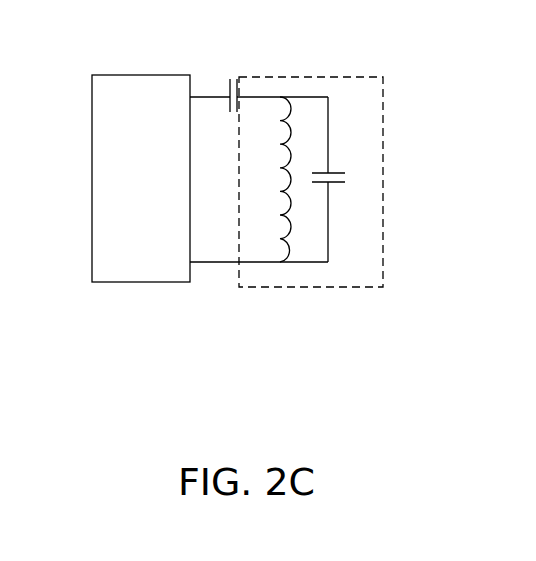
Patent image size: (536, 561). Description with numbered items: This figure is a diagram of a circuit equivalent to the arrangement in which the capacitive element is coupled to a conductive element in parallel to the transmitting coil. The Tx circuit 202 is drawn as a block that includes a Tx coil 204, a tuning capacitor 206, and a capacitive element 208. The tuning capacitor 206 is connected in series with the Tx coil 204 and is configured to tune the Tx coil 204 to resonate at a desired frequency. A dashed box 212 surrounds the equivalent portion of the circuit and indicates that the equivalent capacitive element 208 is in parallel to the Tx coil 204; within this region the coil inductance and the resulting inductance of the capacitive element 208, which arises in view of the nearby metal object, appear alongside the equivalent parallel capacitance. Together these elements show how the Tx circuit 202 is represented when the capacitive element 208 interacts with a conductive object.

The Tx circuit 202 is at (132, 74).
The Tx coil 204 is at (278, 242).
The tuning capacitor 206 is at (229, 81).
The capacitive element 208 is at (339, 152).
The dashed box 212 is at (317, 288).